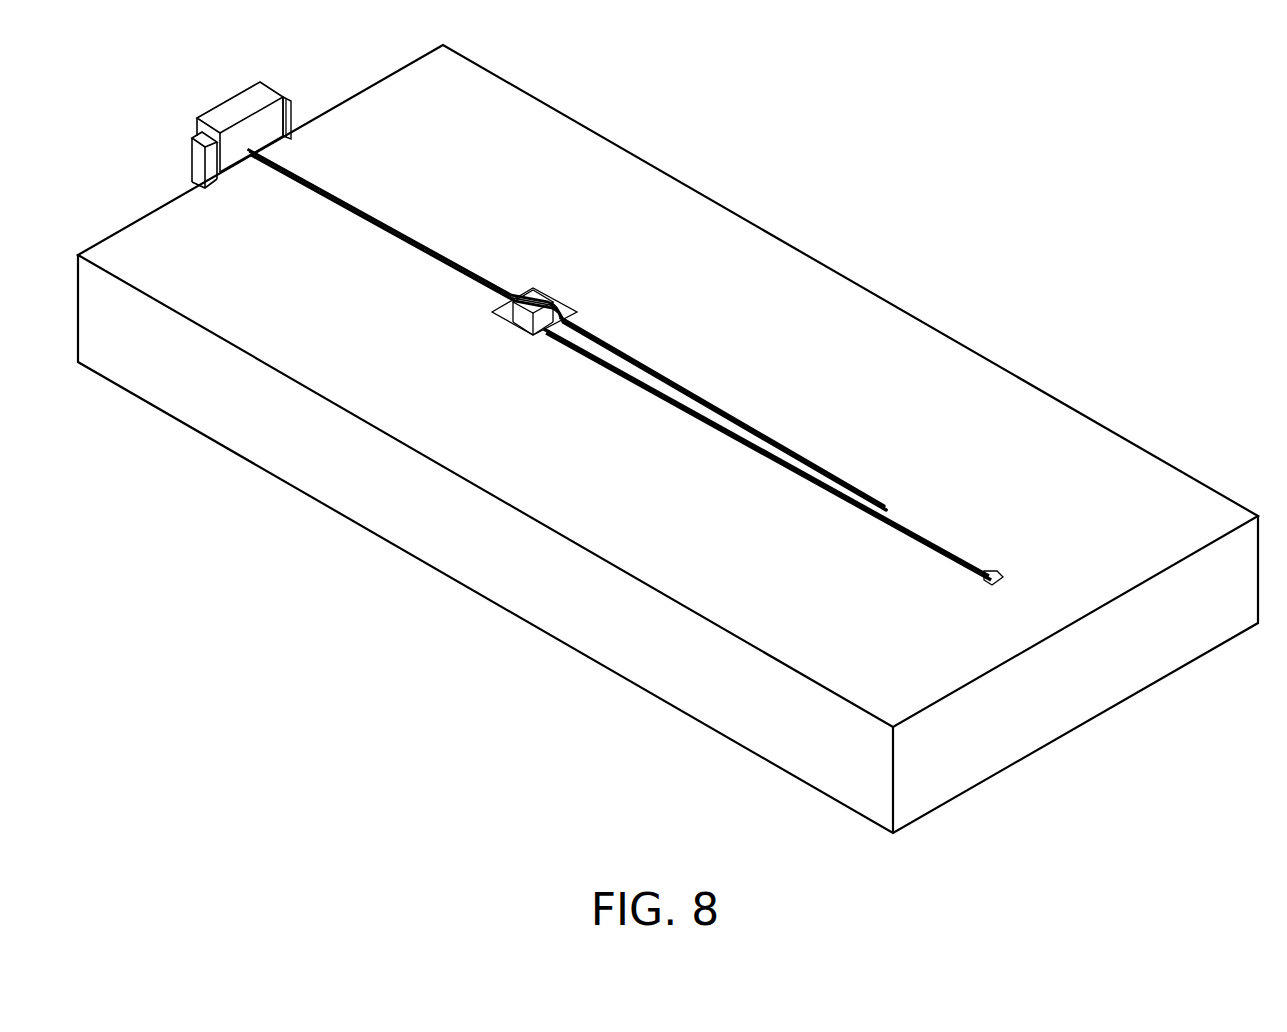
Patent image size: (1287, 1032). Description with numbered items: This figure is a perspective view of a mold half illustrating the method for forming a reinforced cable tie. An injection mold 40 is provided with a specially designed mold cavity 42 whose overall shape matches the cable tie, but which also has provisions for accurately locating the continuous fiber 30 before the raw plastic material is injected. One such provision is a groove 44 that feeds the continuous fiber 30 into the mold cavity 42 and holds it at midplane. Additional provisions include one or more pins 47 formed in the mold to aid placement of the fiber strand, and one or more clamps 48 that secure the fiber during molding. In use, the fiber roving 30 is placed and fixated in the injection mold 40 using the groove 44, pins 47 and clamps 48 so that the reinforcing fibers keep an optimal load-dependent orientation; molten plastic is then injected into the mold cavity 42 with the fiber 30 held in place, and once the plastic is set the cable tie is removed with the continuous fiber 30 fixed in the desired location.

The continuous fiber 30 is at (701, 413).
The injection mold 40 is at (580, 134).
The mold cavity 42 is at (641, 360).
The groove 44 is at (416, 238).
The pin 47 is at (990, 567).
The clamp 48 is at (263, 84).